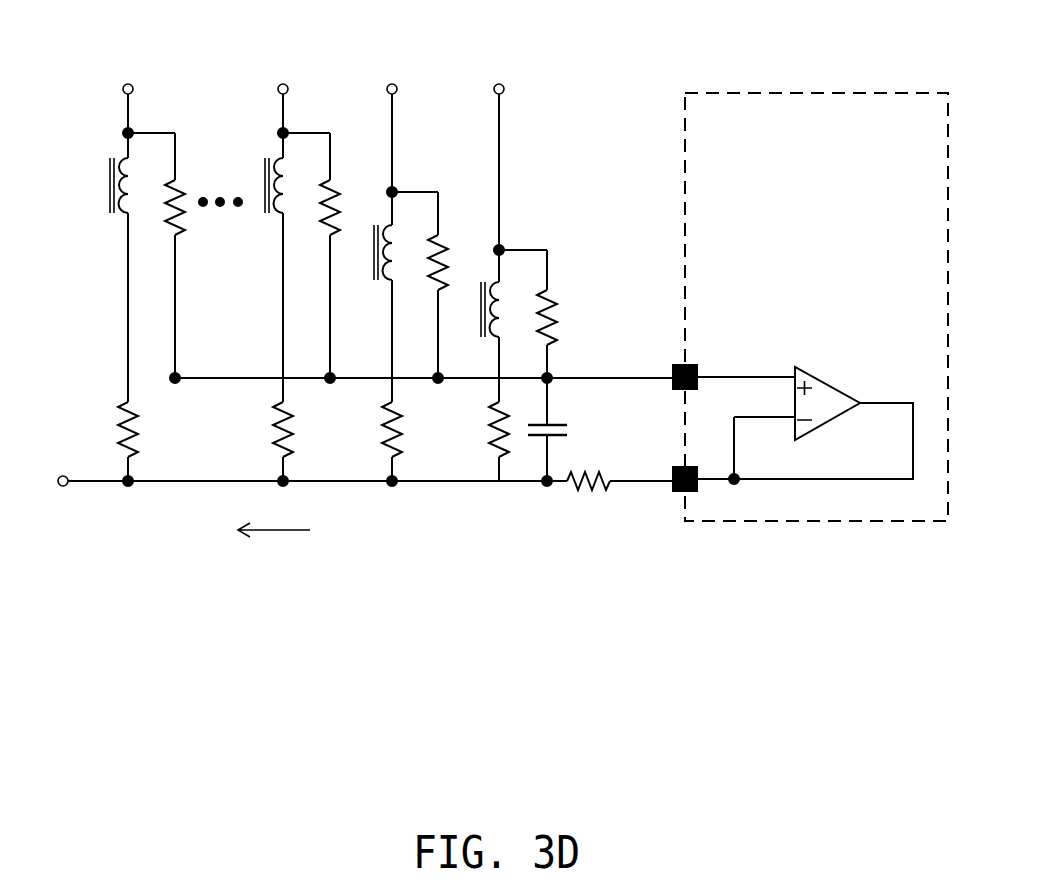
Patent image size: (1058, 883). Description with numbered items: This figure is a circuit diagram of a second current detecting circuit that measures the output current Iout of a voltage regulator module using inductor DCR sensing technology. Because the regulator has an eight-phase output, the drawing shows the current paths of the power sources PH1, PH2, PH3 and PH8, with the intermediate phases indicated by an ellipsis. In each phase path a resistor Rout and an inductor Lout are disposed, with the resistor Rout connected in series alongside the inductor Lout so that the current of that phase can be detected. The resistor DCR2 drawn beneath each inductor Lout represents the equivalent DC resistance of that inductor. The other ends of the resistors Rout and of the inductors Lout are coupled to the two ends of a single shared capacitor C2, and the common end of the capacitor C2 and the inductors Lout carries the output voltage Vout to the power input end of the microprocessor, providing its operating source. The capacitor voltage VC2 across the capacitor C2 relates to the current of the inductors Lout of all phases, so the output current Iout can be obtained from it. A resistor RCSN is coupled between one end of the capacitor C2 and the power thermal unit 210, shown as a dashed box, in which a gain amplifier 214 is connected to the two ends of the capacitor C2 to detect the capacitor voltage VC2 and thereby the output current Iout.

The power thermal unit 210 is at (815, 92).
The gain amplifier 214 is at (828, 385).
The power source PH1 is at (520, 169).
The power source PH2 is at (412, 140).
The power source PH3 is at (304, 111).
The power source PH8 is at (149, 111).
The inductor Lout is at (290, 267).
The resistor Rout is at (386, 279).
The resistor DCR2 is at (283, 441).
The capacitor C2 is at (556, 431).
The capacitor voltage VC2 is at (597, 412).
The resistor Rcsn RCSN is at (620, 502).
The output voltage Vout is at (307, 502).
The output current Iout is at (273, 548).